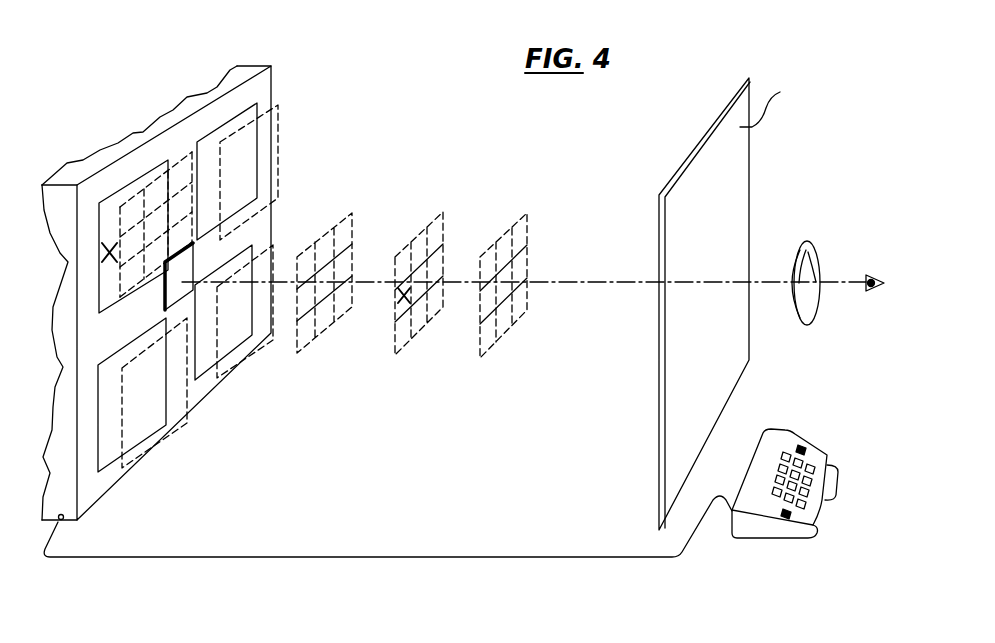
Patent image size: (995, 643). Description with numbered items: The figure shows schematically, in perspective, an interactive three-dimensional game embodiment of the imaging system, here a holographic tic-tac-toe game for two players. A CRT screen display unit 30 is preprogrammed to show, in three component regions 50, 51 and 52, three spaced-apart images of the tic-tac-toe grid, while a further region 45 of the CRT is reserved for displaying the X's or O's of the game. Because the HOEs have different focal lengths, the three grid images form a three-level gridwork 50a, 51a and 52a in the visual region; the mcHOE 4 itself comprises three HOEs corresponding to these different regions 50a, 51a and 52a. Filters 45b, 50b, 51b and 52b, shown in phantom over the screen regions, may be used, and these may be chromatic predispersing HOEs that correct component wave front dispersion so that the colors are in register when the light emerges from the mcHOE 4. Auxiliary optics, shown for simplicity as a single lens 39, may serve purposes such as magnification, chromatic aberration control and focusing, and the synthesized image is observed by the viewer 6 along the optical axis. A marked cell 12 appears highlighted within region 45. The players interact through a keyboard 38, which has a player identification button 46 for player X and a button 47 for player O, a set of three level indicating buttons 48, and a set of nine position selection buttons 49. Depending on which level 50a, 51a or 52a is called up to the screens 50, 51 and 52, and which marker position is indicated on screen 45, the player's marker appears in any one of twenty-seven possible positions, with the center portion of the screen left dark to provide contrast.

The CRT screen display unit 30 is at (250, 67).
The region of the CRT 45 is at (107, 207).
The filter / chromatic predispersing HOE 45b is at (177, 163).
The selected cell 12 is at (179, 276).
The component region 50 is at (276, 105).
The filter / chromatic predispersing HOE 50b is at (280, 143).
The gridwork level / HOE region 50a is at (338, 216).
The component region 51 is at (198, 363).
The filter / chromatic predispersing HOE 51b is at (247, 360).
The gridwork level / HOE region 51a is at (430, 217).
The component region 52 is at (107, 457).
The filter / chromatic predispersing HOE 52b is at (160, 438).
The gridwork level / HOE region 52a is at (512, 217).
The mcHOE 4 is at (751, 173).
The lens 39 is at (810, 243).
The viewer 6 is at (880, 280).
The keyboard 38 is at (813, 527).
The player identification button 46 is at (788, 516).
The player identification button 47 is at (808, 446).
The level indicating buttons 48 is at (807, 501).
The position selection buttons 49 is at (837, 486).